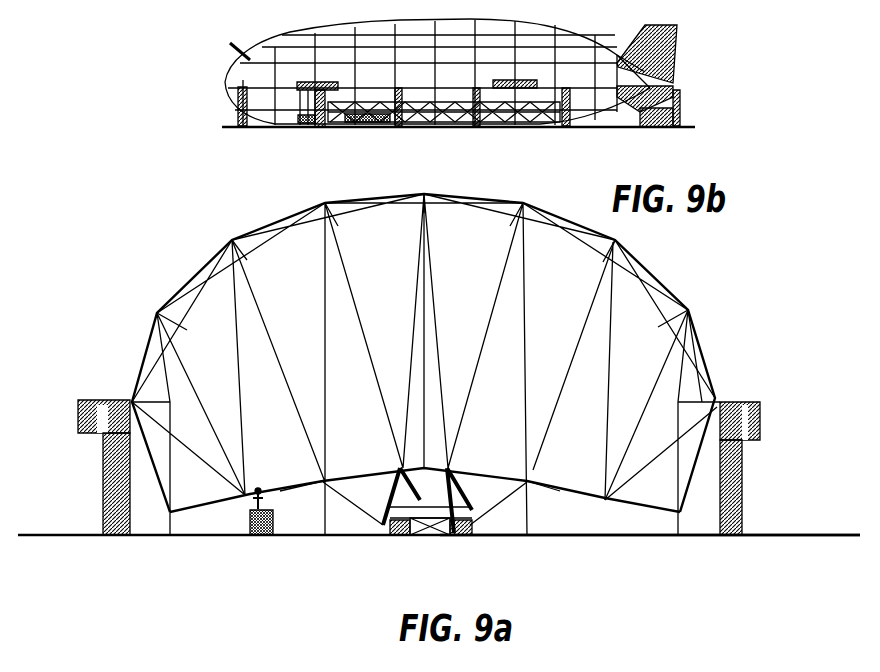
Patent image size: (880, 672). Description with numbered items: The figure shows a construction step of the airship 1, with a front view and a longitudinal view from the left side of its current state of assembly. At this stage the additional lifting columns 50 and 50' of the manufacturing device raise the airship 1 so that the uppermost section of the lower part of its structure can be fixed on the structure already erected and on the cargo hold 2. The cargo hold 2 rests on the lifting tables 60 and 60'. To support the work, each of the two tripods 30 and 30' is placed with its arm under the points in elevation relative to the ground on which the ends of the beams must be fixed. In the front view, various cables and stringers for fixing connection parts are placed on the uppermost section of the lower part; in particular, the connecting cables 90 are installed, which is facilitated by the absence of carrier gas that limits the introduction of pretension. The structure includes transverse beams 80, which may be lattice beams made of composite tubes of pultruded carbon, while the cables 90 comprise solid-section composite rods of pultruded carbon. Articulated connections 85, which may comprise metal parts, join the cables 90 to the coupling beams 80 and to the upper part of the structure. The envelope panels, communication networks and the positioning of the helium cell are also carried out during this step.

In FIG. 9b, the airship 1 is at (697, 68).
In FIG. 9a, the airship 1 is at (687, 310).
In FIG. 9b, the cargo hold 2 is at (310, 124).
In FIG. 9a, the tripod 30 is at (439, 562).
In FIG. 9a, the tripod 30' is at (650, 562).
In FIG. 9a, the additional lifting column 50 is at (93, 437).
In FIG. 9b, the additional lifting column 50' is at (459, 127).
In FIG. 9a, the additional lifting column 50' is at (744, 438).
In FIG. 9a, the lifting table 60 is at (409, 490).
In FIG. 9a, the lifting table 60' is at (478, 490).
In FIG. 9b, the transverse beam 80 is at (597, 110).
In FIG. 9a, the transverse beam 80 is at (222, 500).
In FIG. 9a, the articulated connection 85 is at (232, 240).
In FIG. 9a, the connecting cable 90 is at (612, 378).